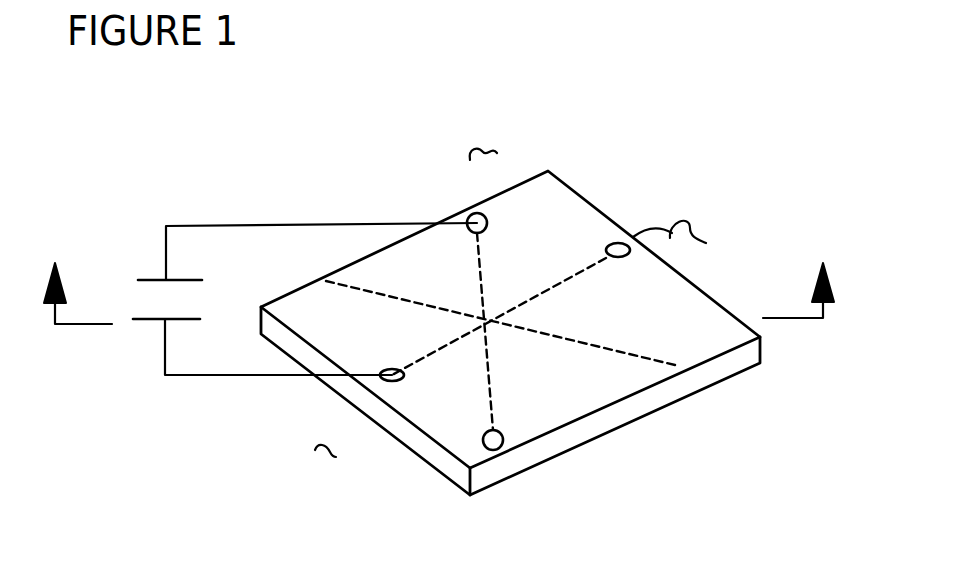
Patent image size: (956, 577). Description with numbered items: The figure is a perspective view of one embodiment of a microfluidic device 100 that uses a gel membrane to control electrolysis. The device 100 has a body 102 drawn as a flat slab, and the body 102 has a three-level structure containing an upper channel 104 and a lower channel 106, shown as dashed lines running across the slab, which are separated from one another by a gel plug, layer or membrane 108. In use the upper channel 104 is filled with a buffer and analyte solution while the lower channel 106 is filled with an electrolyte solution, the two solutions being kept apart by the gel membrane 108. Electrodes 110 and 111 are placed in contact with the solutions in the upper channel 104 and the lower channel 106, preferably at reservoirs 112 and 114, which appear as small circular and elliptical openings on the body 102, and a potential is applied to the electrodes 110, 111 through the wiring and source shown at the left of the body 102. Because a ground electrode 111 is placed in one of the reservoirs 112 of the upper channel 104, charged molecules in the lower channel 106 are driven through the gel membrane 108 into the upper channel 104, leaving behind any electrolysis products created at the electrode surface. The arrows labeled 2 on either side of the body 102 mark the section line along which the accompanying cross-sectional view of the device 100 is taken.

The microfluidic device 100 is at (387, 124).
The body 102 is at (633, 425).
The upper channel 104 is at (487, 250).
The lower channel 106 is at (578, 268).
The gel membrane 108 is at (602, 347).
The electrode 110 is at (672, 233).
The ground electrode 111 is at (484, 213).
The reservoir 112 is at (470, 212).
The reservoir 114 is at (395, 382).
The section line for FIG. 2 is at (439, 282).